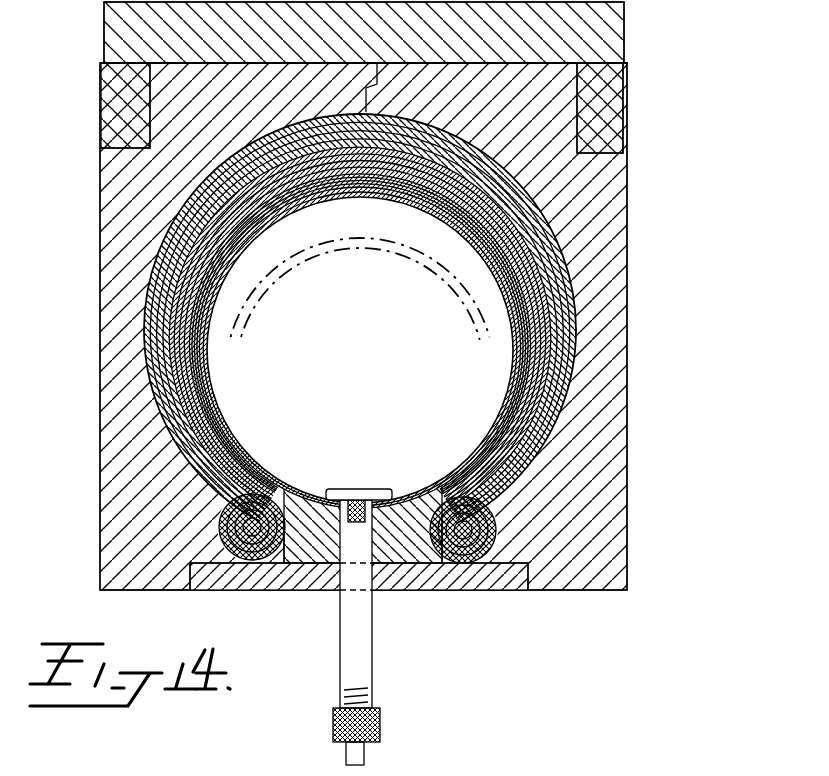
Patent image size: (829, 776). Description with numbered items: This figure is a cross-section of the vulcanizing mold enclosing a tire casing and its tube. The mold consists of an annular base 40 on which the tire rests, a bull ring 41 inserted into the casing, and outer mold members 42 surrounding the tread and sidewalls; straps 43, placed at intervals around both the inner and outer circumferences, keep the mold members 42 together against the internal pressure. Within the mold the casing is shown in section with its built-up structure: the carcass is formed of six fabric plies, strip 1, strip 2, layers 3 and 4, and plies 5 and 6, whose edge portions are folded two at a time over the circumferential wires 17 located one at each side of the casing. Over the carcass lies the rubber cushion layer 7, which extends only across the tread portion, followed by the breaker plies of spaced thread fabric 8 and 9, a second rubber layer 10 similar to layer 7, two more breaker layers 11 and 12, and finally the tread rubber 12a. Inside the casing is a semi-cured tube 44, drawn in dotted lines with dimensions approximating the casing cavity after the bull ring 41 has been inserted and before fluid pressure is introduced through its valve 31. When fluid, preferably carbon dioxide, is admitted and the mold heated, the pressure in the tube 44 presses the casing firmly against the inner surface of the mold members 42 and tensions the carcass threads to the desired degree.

The strip number 1 is at (209, 404).
The strip number 2 is at (218, 416).
The layer number 3 is at (226, 430).
The layer number 4 is at (236, 446).
The ply 5 is at (250, 462).
The ply 6 is at (268, 470).
The layer of rubber 7 is at (456, 222).
The ply of thread fabric 8 is at (148, 332).
The ply of thread fabric 9 is at (163, 343).
The layer of rubber 10 is at (510, 214).
The breaker layer of fabric 11 is at (178, 378).
The breaker layer of fabric 12 is at (172, 362).
The tread rubber 12a is at (572, 265).
The circumferential wires 17 is at (243, 583).
The valve 31 is at (364, 676).
The annular base 40 is at (462, 595).
The bull ring 41 is at (322, 553).
The outer mold members 42 is at (106, 436).
The straps 43 is at (612, 43).
The semi-cured tube 44 is at (347, 199).